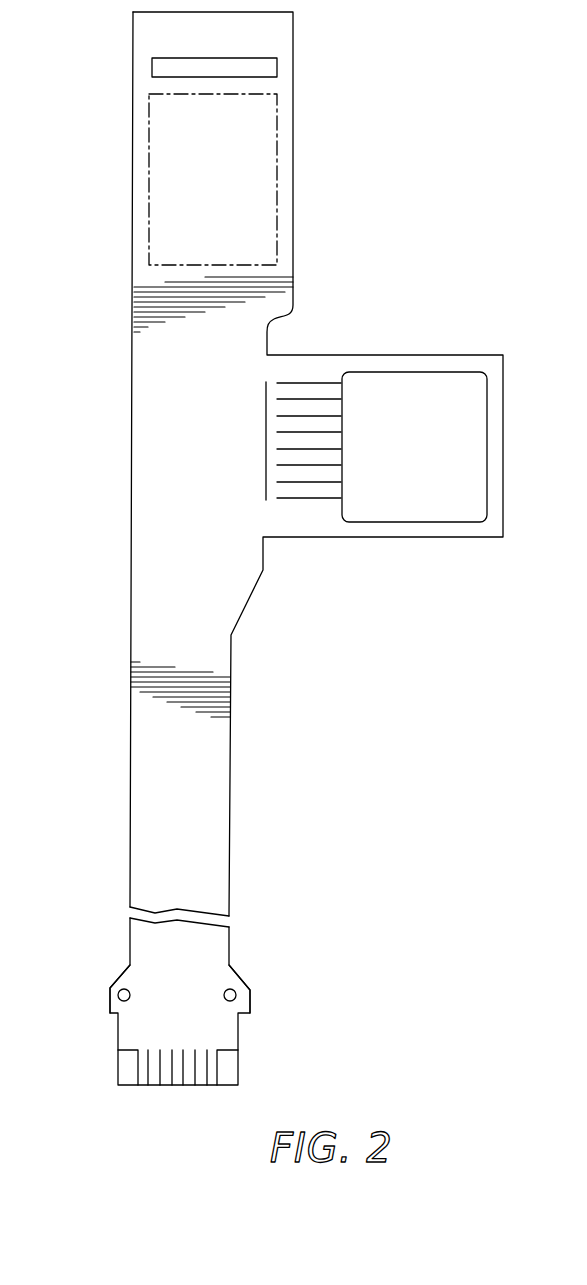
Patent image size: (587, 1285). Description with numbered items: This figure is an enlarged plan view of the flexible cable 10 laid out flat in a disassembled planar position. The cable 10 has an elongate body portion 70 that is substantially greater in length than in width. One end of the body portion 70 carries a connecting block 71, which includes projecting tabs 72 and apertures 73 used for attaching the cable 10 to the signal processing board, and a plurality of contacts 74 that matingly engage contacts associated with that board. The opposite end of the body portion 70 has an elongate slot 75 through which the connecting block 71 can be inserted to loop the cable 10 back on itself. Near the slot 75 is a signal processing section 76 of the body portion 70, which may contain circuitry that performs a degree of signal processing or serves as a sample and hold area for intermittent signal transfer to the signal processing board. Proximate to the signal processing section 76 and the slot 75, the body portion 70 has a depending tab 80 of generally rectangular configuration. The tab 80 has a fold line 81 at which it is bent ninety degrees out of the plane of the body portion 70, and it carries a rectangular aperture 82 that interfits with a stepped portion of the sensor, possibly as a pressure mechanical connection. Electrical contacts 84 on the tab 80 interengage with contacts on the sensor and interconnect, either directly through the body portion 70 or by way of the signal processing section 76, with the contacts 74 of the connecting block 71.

The flexible cable 10 is at (264, 583).
The body portion 70 is at (232, 658).
The connecting block 71 is at (178, 1030).
The projecting tabs 72 is at (110, 988).
The apertures 73 is at (118, 997).
The contacts 74 is at (197, 1072).
The elongate slot 75 is at (277, 60).
The signal processing section 76 is at (277, 170).
The depending tab 80 is at (376, 434).
The fold line 81 is at (330, 446).
The aperture 82 is at (402, 372).
The electrical contacts 84 is at (323, 500).